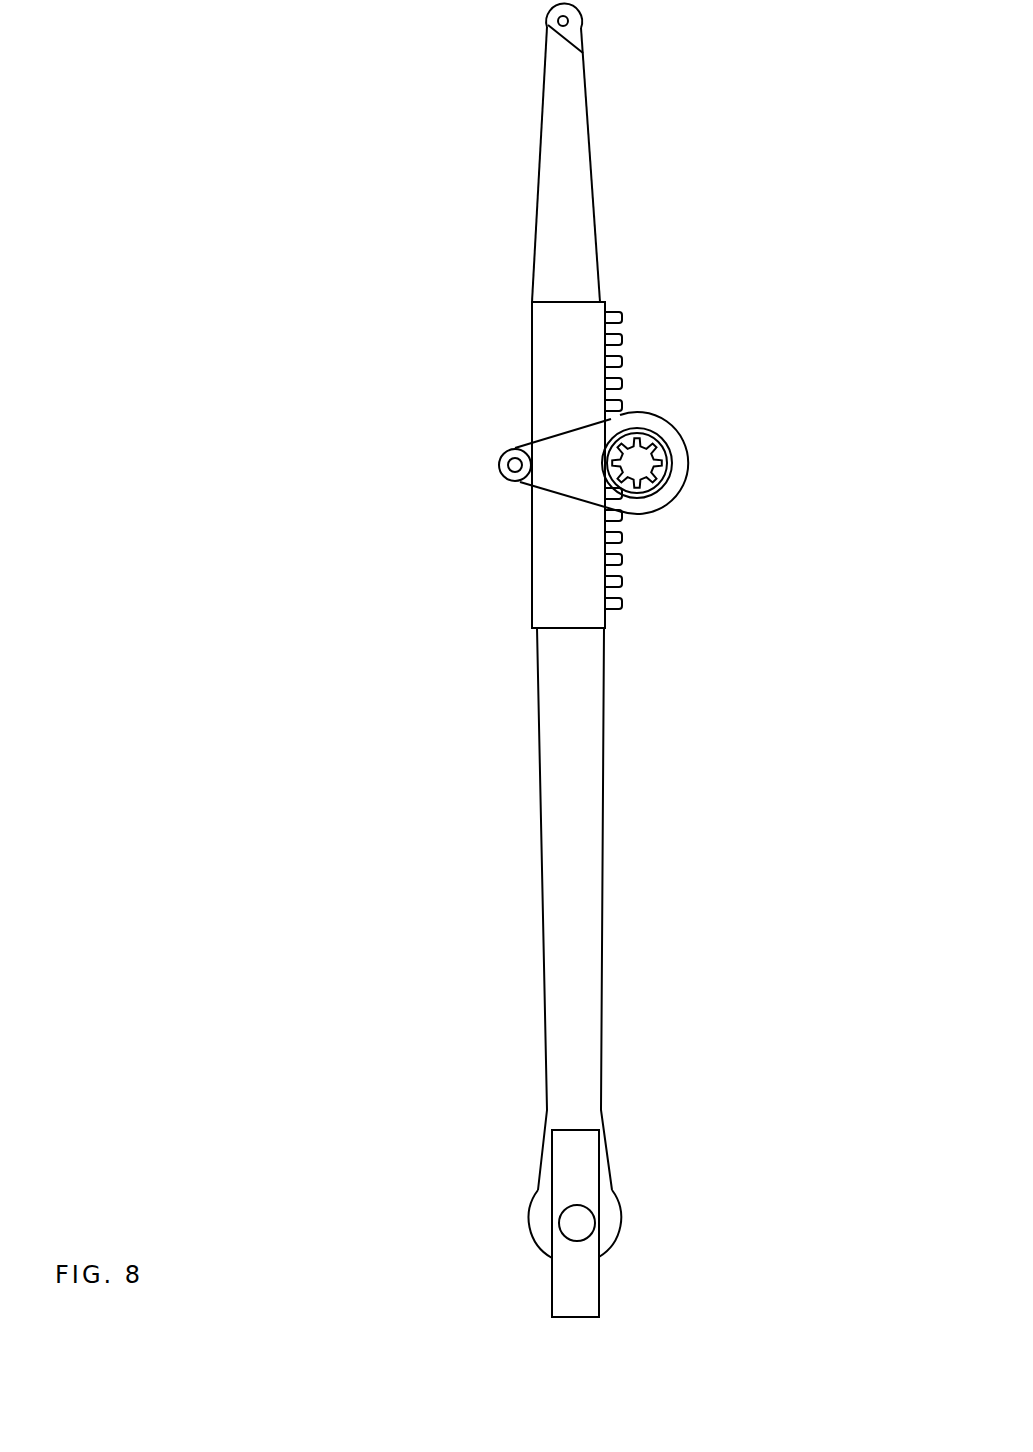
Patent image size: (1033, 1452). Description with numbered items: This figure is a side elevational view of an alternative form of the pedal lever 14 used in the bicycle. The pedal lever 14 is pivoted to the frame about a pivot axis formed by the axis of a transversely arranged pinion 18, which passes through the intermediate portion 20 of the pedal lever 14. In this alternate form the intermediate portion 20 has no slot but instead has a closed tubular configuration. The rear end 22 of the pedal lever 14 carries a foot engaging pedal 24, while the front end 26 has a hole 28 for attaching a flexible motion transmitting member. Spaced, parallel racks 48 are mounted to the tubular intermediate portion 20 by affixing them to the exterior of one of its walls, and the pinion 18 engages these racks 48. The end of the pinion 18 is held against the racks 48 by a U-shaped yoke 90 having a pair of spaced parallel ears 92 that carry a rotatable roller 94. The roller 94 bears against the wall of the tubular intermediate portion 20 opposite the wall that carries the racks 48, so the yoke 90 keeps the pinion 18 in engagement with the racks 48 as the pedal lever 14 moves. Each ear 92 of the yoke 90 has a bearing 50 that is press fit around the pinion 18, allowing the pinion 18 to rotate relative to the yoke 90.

The pedal lever 14 is at (597, 223).
The pinion 18 is at (658, 483).
The intermediate portion 20 is at (530, 342).
The rear end 22 is at (578, 992).
The foot engaging pedal 24 is at (575, 1152).
The front end 26 is at (570, 157).
The hole 28 is at (568, 21).
The racks 48 is at (623, 345).
The bearing 50 is at (660, 442).
The U-shaped yoke 90 is at (557, 420).
The ears 92 is at (567, 470).
The roller 94 is at (499, 463).